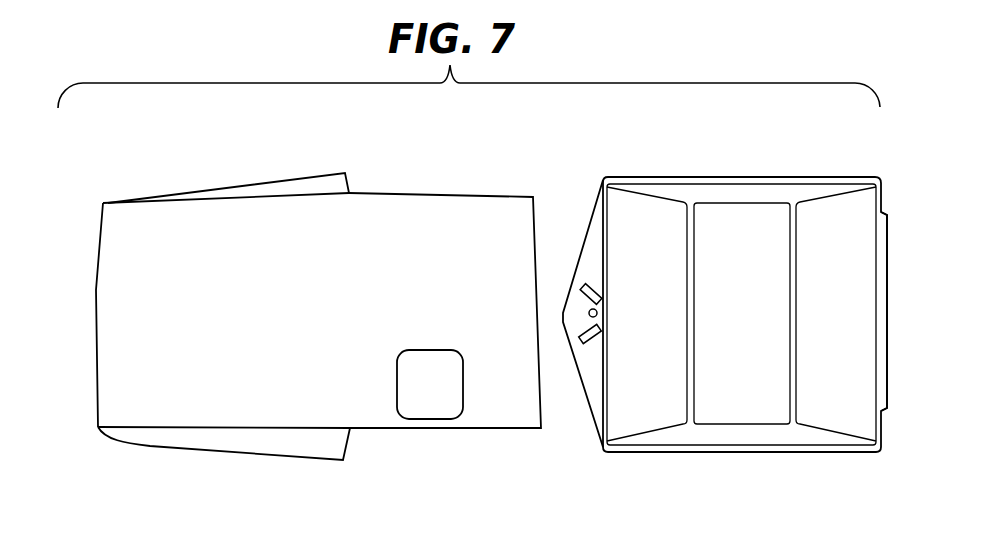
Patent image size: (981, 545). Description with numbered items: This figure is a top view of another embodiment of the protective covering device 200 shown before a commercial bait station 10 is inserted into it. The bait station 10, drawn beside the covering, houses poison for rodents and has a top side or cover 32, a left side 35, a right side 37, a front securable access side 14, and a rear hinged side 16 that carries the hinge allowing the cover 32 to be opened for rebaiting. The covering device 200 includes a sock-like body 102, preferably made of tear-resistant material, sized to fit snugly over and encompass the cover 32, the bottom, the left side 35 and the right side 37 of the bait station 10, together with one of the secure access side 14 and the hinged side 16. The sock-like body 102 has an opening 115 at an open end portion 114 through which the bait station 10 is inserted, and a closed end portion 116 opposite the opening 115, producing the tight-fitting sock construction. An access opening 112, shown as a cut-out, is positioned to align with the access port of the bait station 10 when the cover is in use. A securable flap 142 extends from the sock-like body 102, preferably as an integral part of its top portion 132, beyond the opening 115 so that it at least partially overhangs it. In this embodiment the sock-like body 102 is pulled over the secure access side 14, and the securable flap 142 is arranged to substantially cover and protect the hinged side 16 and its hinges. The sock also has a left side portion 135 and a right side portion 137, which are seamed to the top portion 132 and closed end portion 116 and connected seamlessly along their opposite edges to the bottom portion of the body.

The bait station 10 is at (727, 299).
The securable access side 14 is at (592, 438).
The hinged side 16 is at (886, 412).
The top side or cover 32 is at (743, 228).
The left side 35 is at (662, 188).
The right side 37 is at (720, 447).
The sock-like body 102 is at (237, 175).
The access opening 112 is at (452, 408).
The open end portion 114 is at (343, 474).
The opening 115 is at (358, 437).
The closed end portion 116 is at (97, 428).
The top portion 132 is at (167, 252).
The left side portion 135 is at (283, 186).
The right side portion 137 is at (250, 457).
The securable flap 142 is at (432, 212).
The device 200 is at (279, 321).